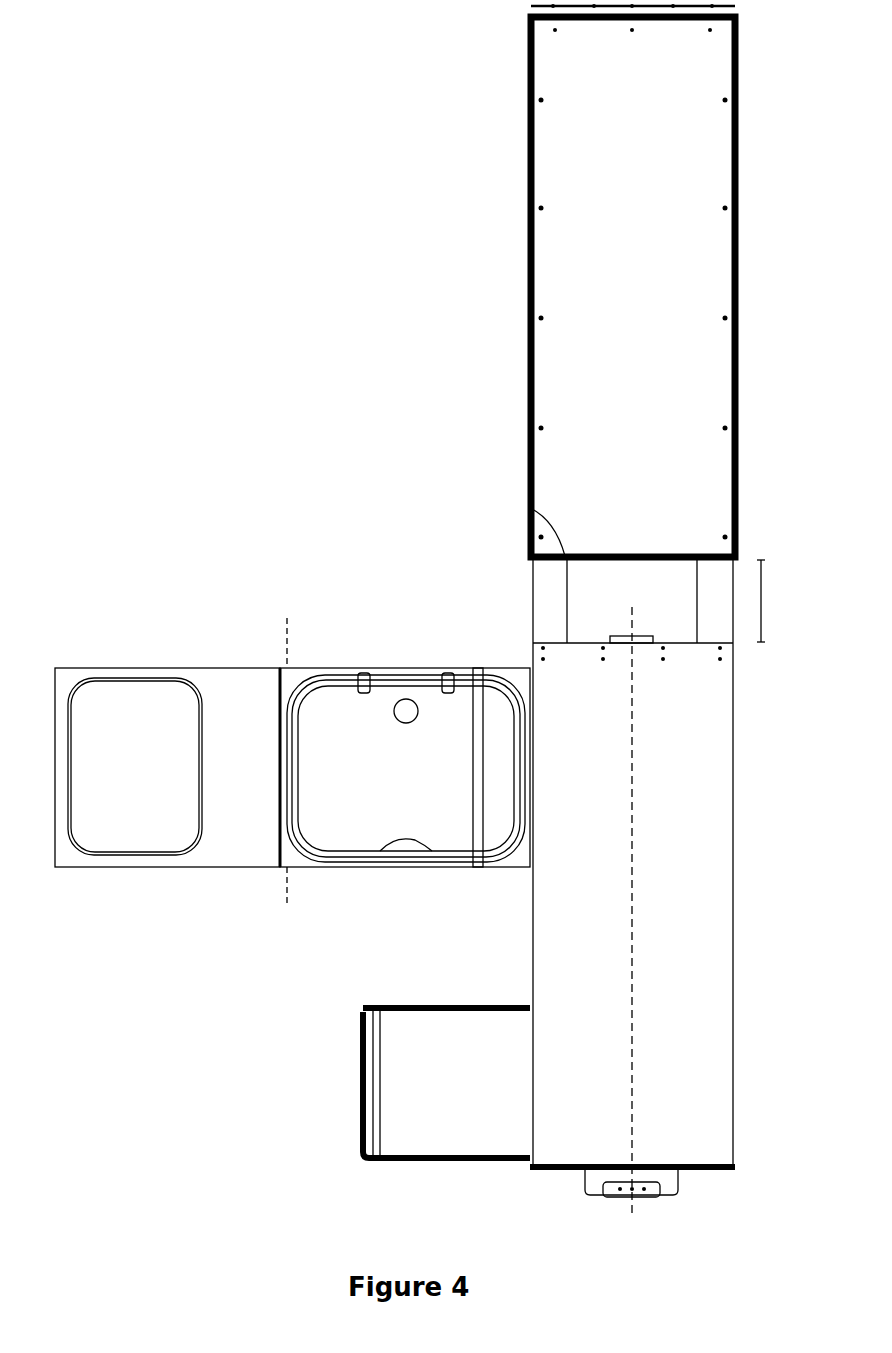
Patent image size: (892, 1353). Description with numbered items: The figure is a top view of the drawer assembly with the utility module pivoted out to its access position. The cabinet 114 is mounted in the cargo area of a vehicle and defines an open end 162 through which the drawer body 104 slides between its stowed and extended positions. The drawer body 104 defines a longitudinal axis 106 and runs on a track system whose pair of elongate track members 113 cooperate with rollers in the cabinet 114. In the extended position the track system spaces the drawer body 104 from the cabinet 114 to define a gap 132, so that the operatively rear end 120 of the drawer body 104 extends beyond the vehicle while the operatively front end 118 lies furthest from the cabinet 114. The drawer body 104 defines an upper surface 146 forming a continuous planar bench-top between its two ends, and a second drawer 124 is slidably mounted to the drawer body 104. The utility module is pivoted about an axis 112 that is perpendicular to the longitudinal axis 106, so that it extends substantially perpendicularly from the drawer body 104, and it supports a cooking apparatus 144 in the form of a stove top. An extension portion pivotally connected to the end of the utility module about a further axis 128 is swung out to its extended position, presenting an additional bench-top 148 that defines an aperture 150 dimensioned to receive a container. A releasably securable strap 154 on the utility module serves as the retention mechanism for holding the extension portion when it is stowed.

The drawer body 104 is at (552, 905).
The longitudinal axis 106 is at (632, 940).
The axis 112 is at (530, 668).
The track members 113 is at (548, 600).
The cabinet 114 is at (548, 252).
The operatively front end 118 is at (558, 1168).
The operatively rear end 120 is at (702, 670).
The second drawer 124 is at (370, 1120).
The further axis 128 is at (287, 625).
The gap 132 is at (765, 595).
The cooking apparatus 144 is at (372, 700).
The upper surface 146 is at (553, 985).
The bench-top 148 is at (218, 690).
The aperture 150 is at (110, 698).
The strap 154 is at (470, 835).
The open end 162 is at (528, 508).